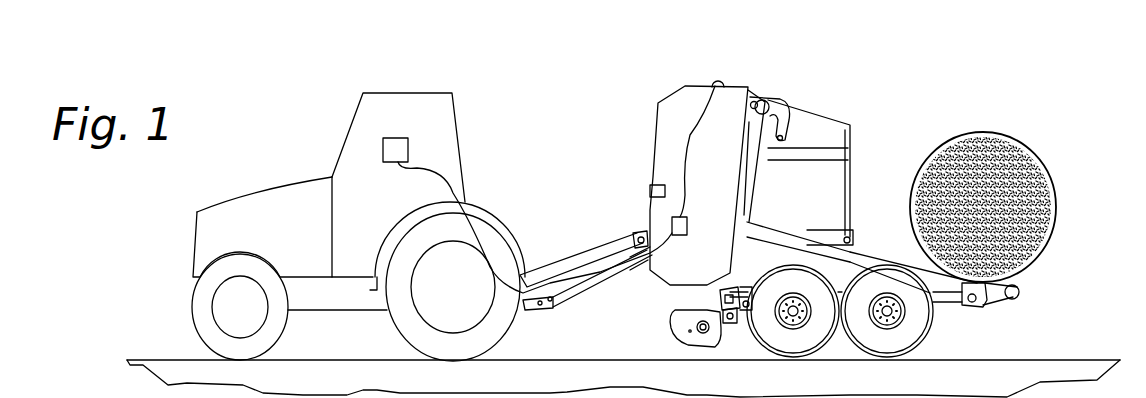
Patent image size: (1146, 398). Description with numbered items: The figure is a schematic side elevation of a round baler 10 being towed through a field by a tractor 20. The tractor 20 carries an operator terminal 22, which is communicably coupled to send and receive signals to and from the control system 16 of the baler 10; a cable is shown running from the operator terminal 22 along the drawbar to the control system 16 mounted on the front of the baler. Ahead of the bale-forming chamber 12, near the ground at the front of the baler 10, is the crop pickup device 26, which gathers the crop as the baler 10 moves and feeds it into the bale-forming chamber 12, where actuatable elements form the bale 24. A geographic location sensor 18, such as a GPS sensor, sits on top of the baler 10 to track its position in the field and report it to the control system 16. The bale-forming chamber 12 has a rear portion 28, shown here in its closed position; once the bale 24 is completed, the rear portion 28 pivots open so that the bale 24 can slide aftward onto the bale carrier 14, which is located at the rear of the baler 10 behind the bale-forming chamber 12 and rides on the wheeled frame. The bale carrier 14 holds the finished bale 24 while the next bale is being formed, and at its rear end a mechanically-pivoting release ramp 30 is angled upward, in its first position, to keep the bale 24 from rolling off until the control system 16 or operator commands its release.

The baler 10 is at (836, 71).
The bale-forming chamber 12 is at (652, 136).
The bale carrier 14 is at (962, 305).
The control system 16 is at (672, 224).
The geographic location sensor 18 is at (718, 84).
The tractor 20 is at (395, 92).
The operator terminal 22 is at (408, 150).
The bale 24 is at (1050, 183).
The crop pickup device 26 is at (690, 338).
The rear portion 28 is at (828, 112).
The release ramp 30 is at (1022, 292).